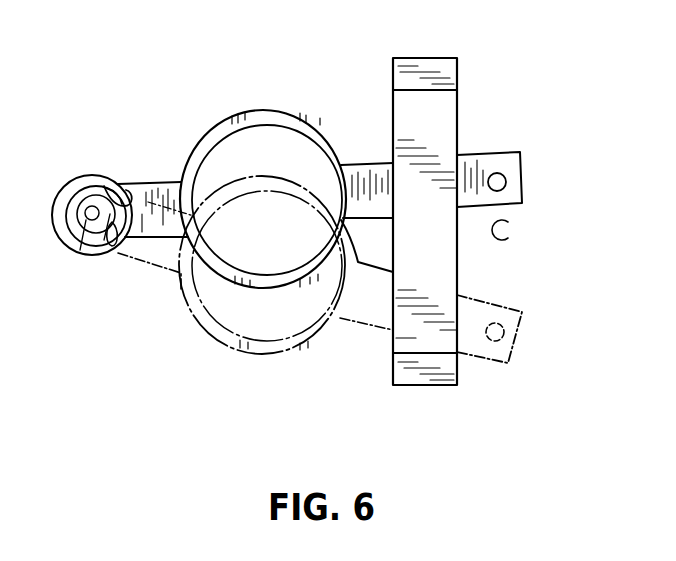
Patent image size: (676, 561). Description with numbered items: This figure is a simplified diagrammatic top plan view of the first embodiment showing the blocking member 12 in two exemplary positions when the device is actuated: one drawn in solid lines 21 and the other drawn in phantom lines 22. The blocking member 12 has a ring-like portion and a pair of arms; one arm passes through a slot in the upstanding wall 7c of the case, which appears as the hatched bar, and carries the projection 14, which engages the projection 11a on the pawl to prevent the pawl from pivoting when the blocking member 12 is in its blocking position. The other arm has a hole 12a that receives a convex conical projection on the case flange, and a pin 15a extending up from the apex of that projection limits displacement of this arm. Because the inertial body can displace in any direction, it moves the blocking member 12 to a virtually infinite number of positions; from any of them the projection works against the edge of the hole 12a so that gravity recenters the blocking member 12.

The upstanding wall 7c is at (450, 58).
The solid lines 21 is at (219, 122).
The phantom lines 22 is at (304, 355).
The blocking member 12 is at (177, 277).
The hole 12a is at (143, 178).
The projection 14 is at (500, 180).
The pin 15a is at (78, 237).
The projection 11a is at (510, 236).